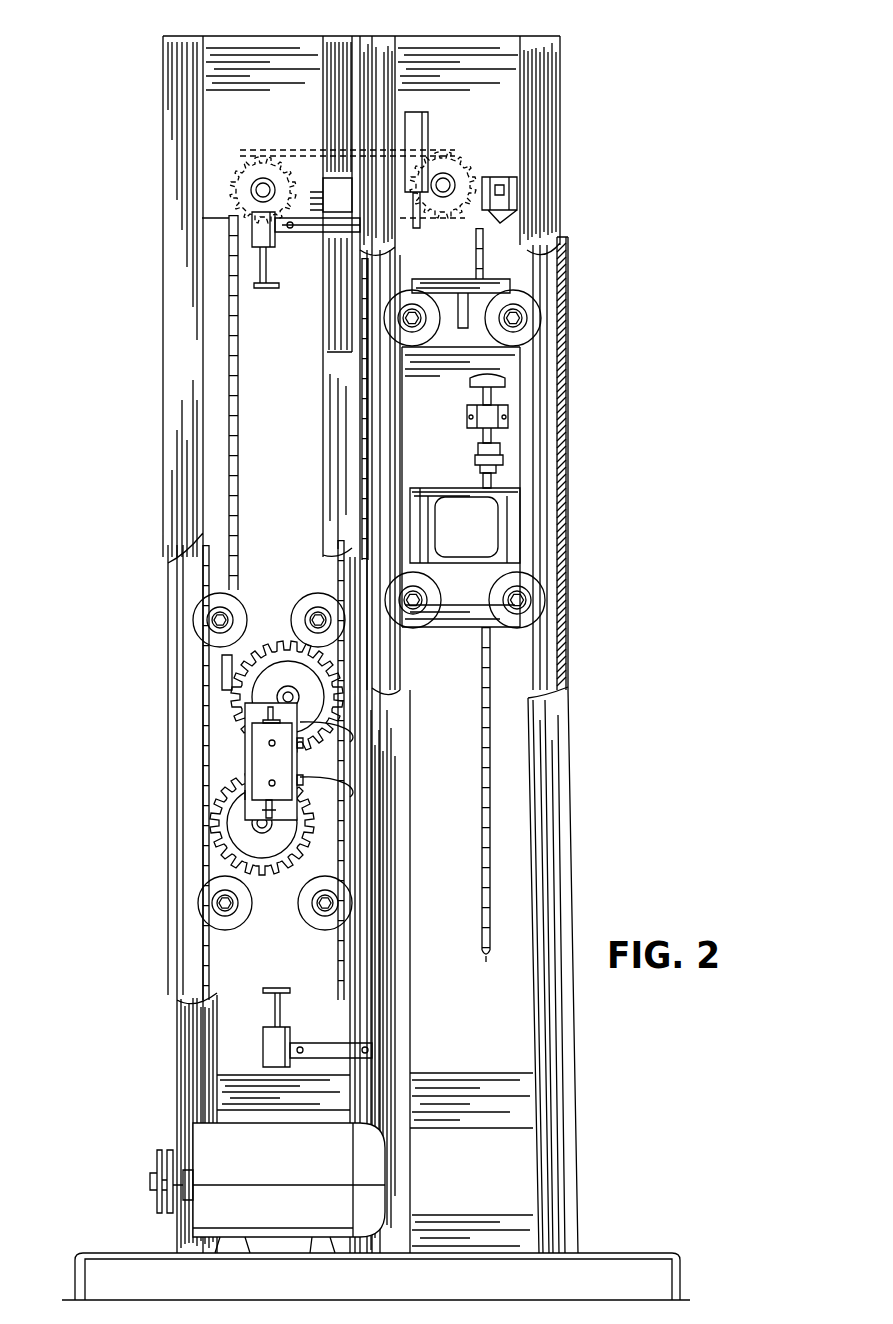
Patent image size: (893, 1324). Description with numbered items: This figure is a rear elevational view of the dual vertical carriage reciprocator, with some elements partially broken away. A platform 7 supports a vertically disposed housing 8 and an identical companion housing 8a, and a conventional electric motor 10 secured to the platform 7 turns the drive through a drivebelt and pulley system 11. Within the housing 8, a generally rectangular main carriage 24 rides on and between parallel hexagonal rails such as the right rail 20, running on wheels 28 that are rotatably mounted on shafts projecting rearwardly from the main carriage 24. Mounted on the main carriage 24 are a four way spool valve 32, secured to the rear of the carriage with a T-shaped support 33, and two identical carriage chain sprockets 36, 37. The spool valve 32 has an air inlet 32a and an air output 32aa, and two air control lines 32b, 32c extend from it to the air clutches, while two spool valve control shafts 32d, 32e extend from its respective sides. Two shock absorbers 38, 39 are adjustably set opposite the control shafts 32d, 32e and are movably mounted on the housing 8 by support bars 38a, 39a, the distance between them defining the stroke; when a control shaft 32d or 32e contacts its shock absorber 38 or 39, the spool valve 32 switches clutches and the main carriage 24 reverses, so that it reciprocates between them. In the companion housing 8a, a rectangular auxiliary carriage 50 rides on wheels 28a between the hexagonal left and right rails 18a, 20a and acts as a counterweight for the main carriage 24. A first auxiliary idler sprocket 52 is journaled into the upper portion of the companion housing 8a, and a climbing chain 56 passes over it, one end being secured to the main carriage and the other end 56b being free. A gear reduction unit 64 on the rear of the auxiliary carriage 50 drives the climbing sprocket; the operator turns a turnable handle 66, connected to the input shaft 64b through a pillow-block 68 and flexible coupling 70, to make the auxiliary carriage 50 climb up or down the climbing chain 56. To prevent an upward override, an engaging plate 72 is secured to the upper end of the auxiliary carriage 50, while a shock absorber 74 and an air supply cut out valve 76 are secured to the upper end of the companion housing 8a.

The platform 7 is at (612, 1252).
The housing 8 is at (232, 40).
The companion housing 8a is at (432, 40).
The electric motor 10 is at (291, 1168).
The drivebelt and pulley system 11 is at (158, 1160).
The left rail 18a is at (558, 650).
The right rail 20 is at (187, 962).
The right rail 20a is at (374, 263).
The main carriage 24 is at (233, 655).
The wheel 28 is at (304, 598).
The wheel 28a is at (538, 312).
The four way spool valve 32 is at (255, 737).
The air inlet 32a is at (269, 743).
The air output 32aa is at (269, 783).
The air control line 32b is at (350, 742).
The air control line 32c is at (350, 797).
The spool valve control shaft 32d is at (266, 713).
The spool valve control shaft 32e is at (246, 795).
The T-shaped support 33 is at (262, 810).
The carriage chain sprocket 36 is at (281, 668).
The carriage chain sprocket 37 is at (265, 853).
The shock absorber 38 is at (255, 285).
The support bar 38a is at (292, 226).
The shock absorber 39 is at (275, 1000).
The support bar 39a is at (326, 1045).
The auxiliary carriage 50 is at (445, 414).
The first auxiliary idler sprocket 52 is at (455, 160).
The climbing chain 56 is at (240, 445).
The end 56b is at (486, 962).
The gear reduction unit 64 is at (480, 534).
The input shaft 64b is at (483, 482).
The turnable handle 66 is at (487, 377).
The pillow-block 68 is at (505, 415).
The flexible coupling 70 is at (503, 460).
The engaging plate 72 is at (500, 282).
The shock absorber 74 is at (428, 130).
The air supply cut out valve 76 is at (503, 184).